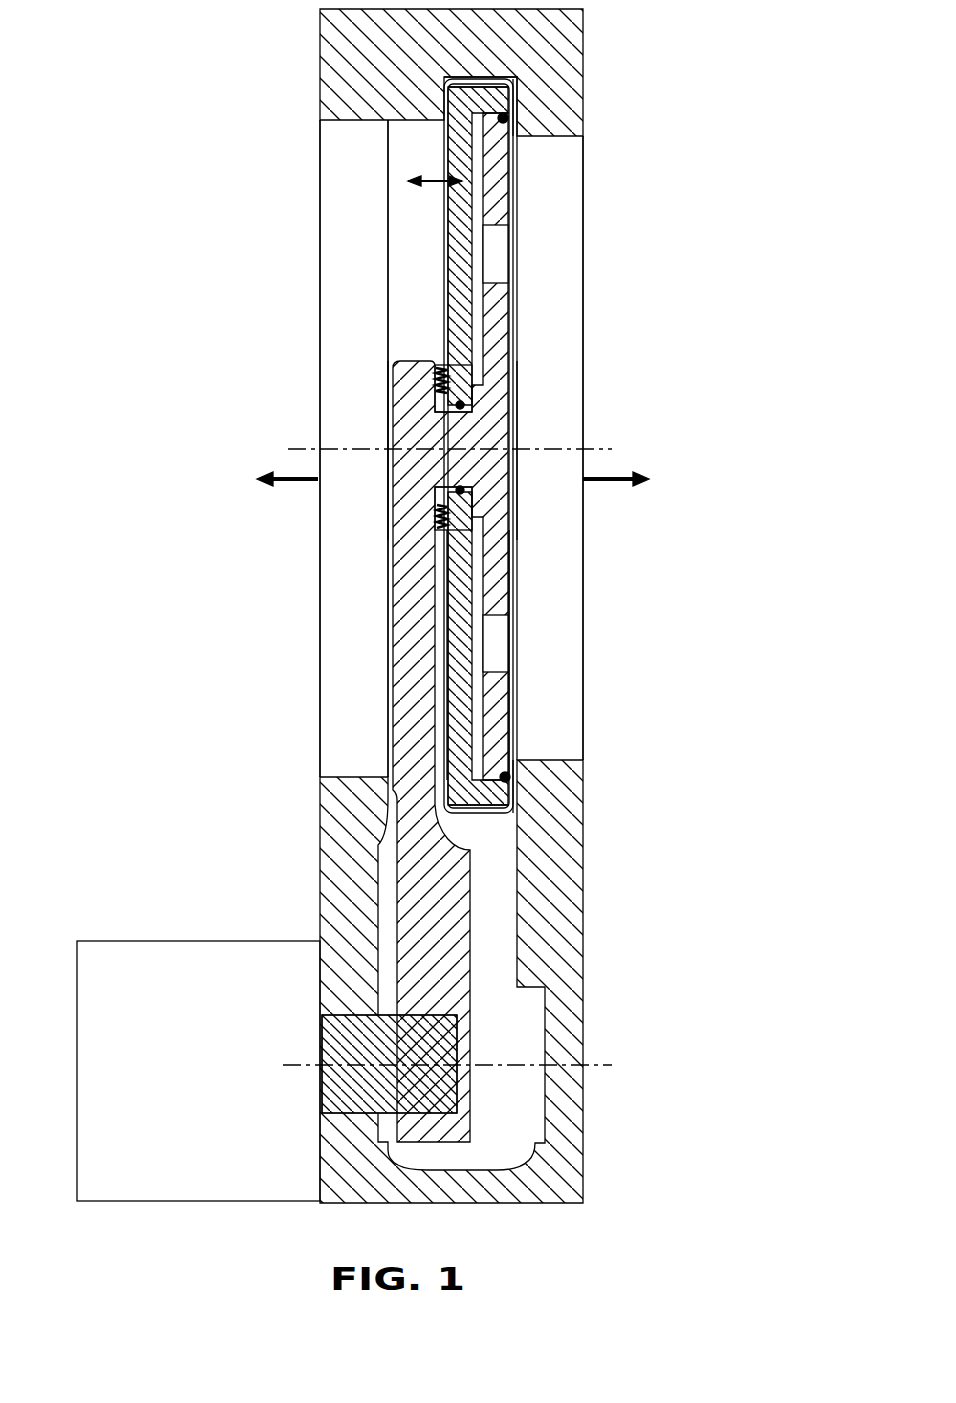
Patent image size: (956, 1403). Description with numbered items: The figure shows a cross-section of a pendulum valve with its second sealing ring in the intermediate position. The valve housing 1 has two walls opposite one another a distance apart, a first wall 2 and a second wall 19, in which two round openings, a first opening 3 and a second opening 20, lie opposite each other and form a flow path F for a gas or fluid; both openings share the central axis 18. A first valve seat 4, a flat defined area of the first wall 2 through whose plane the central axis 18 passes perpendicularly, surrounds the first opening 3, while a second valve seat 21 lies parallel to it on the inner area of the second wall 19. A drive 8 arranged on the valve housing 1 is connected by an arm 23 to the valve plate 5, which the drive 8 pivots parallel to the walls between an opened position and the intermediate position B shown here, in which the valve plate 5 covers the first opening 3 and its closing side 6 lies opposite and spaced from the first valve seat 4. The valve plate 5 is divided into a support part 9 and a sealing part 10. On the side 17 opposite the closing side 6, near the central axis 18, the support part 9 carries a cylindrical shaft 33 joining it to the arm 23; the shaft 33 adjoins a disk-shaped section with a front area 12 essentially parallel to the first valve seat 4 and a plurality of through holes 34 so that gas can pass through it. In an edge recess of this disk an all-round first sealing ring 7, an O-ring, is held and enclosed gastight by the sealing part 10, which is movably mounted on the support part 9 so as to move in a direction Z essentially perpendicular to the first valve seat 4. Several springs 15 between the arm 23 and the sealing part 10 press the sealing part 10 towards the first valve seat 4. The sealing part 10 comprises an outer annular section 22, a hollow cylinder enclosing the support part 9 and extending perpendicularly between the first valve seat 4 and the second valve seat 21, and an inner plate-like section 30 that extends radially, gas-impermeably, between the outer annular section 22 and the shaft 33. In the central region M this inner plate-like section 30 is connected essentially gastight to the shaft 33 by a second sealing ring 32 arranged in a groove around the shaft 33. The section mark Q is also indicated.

The valve housing 1 is at (602, 30).
The first wall 2 is at (565, 116).
The first opening 3 is at (561, 441).
The first valve seat 4 is at (517, 115).
The valve plate 5 is at (425, 315).
The closing side 6 is at (555, 373).
The first sealing ring 7 is at (503, 118).
The drive 8 is at (215, 1072).
The support part 9 is at (500, 520).
The sealing part 10 is at (457, 233).
The front area 12 is at (510, 578).
The springs 15 is at (450, 520).
The side opposite to the closing side 17 is at (348, 372).
The central axis 18 is at (600, 448).
The second wall 19 is at (408, 98).
The second opening 20 is at (373, 441).
The second valve seat 21 is at (517, 114).
The outer annular section 22 is at (483, 101).
The arm 23 is at (415, 583).
The inner plate-like section 30 is at (460, 292).
The second sealing ring 32 is at (453, 492).
The cylindrical shaft 33 is at (460, 458).
The through holes 34 is at (497, 250).
The intermediate position B is at (531, 59).
The cross-section Q is at (556, 110).
The direction Z is at (462, 181).
The central region M is at (461, 441).
The flow path F is at (458, 481).